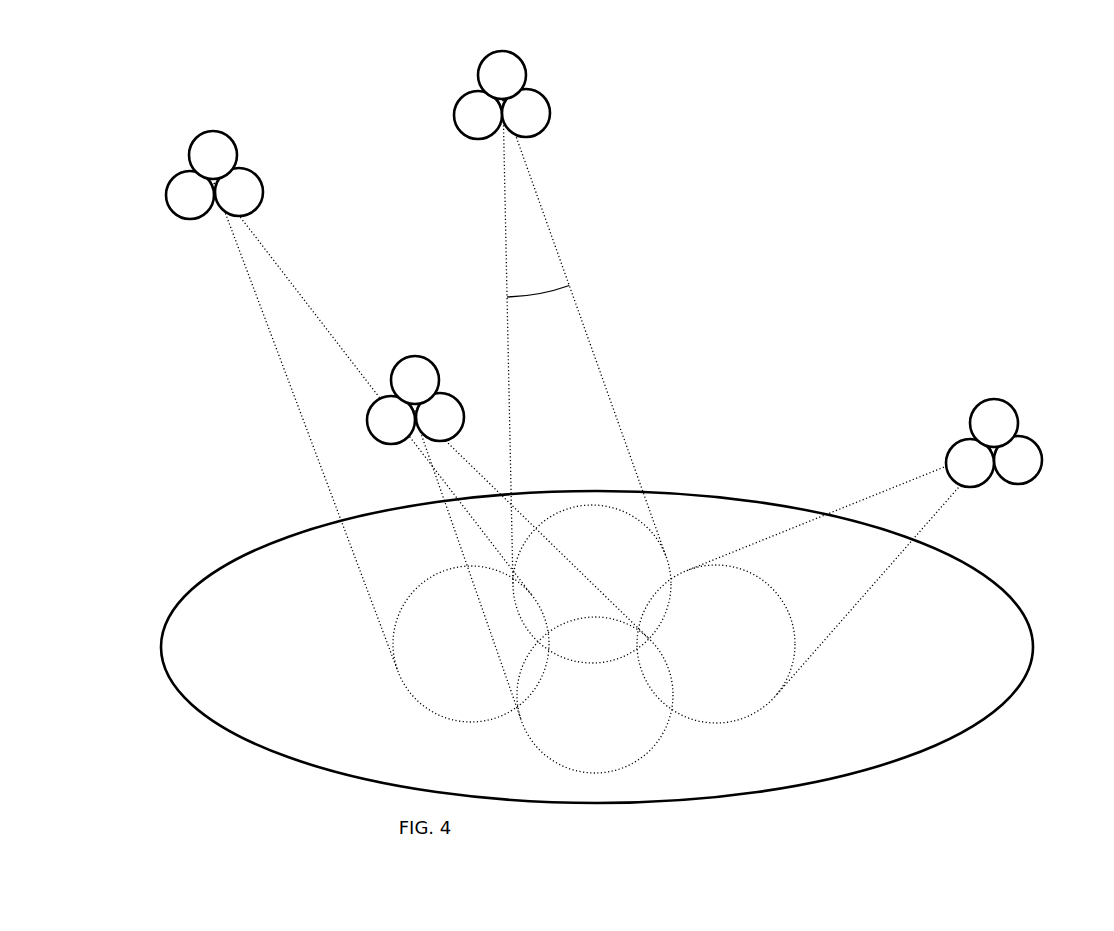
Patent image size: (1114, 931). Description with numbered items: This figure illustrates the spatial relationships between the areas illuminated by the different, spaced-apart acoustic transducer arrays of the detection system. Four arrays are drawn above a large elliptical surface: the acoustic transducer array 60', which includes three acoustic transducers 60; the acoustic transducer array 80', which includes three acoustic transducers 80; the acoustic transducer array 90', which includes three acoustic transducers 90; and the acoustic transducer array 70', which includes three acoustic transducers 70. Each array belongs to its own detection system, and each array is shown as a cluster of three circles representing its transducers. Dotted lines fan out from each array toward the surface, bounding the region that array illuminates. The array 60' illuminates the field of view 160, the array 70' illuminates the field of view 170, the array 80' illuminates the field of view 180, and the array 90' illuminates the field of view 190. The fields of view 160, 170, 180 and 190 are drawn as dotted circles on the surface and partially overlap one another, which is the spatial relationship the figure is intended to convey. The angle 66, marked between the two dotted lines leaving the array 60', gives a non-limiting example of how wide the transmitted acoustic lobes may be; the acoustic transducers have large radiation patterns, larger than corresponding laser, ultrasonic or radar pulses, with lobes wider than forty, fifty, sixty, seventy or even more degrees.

The acoustic transducer 60 is at (502, 95).
The acoustic transducer array 60' is at (565, 92).
The acoustic transducer 70 is at (994, 443).
The acoustic transducer array 70' is at (1021, 422).
The acoustic transducer 80 is at (214, 175).
The acoustic transducer array 80' is at (274, 167).
The acoustic transducer 90 is at (415, 400).
The acoustic transducer array 90' is at (415, 365).
The angle 66 is at (584, 343).
The field of view 160 is at (575, 549).
The field of view 170 is at (699, 714).
The field of view 180 is at (454, 691).
The field of view 190 is at (583, 756).